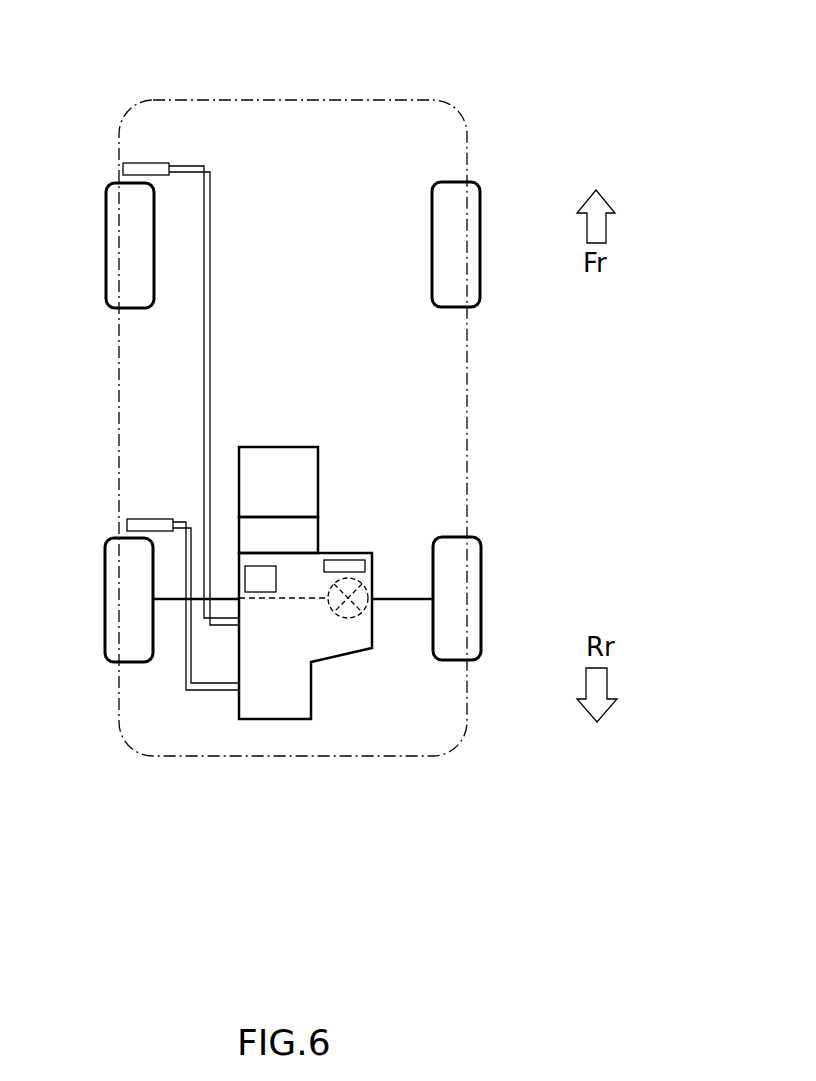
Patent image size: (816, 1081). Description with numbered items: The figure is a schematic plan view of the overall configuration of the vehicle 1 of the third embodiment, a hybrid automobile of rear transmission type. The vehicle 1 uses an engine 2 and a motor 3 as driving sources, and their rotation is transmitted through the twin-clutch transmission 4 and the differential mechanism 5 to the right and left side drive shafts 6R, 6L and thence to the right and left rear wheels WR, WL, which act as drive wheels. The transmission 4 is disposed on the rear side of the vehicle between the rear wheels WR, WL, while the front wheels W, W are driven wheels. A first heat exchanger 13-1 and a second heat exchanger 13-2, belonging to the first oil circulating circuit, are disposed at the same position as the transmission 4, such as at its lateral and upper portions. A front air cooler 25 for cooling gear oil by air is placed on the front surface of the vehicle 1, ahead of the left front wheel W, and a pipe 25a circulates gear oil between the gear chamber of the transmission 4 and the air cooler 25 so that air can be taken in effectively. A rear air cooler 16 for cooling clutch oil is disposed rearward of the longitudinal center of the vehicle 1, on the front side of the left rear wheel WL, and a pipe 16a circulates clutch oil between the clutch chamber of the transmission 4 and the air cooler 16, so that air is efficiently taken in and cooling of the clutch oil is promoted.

The vehicle 1 is at (463, 96).
The engine 2 is at (320, 480).
The motor 3 is at (320, 537).
The twin-clutch transmission 4 is at (312, 706).
The differential mechanism 5 is at (364, 580).
The left side drive shaft 6L is at (180, 601).
The right side drive shaft 6R is at (408, 601).
The first heat exchanger 13-1 is at (352, 562).
The second heat exchanger 13-2 is at (258, 580).
The rear air cooler 16 is at (148, 518).
The pipe 16a is at (205, 692).
The front air cooler 25 is at (150, 160).
The pipe 25a is at (210, 277).
The front wheel W is at (106, 226).
The left rear wheel WL is at (105, 592).
The right rear wheel WR is at (481, 593).